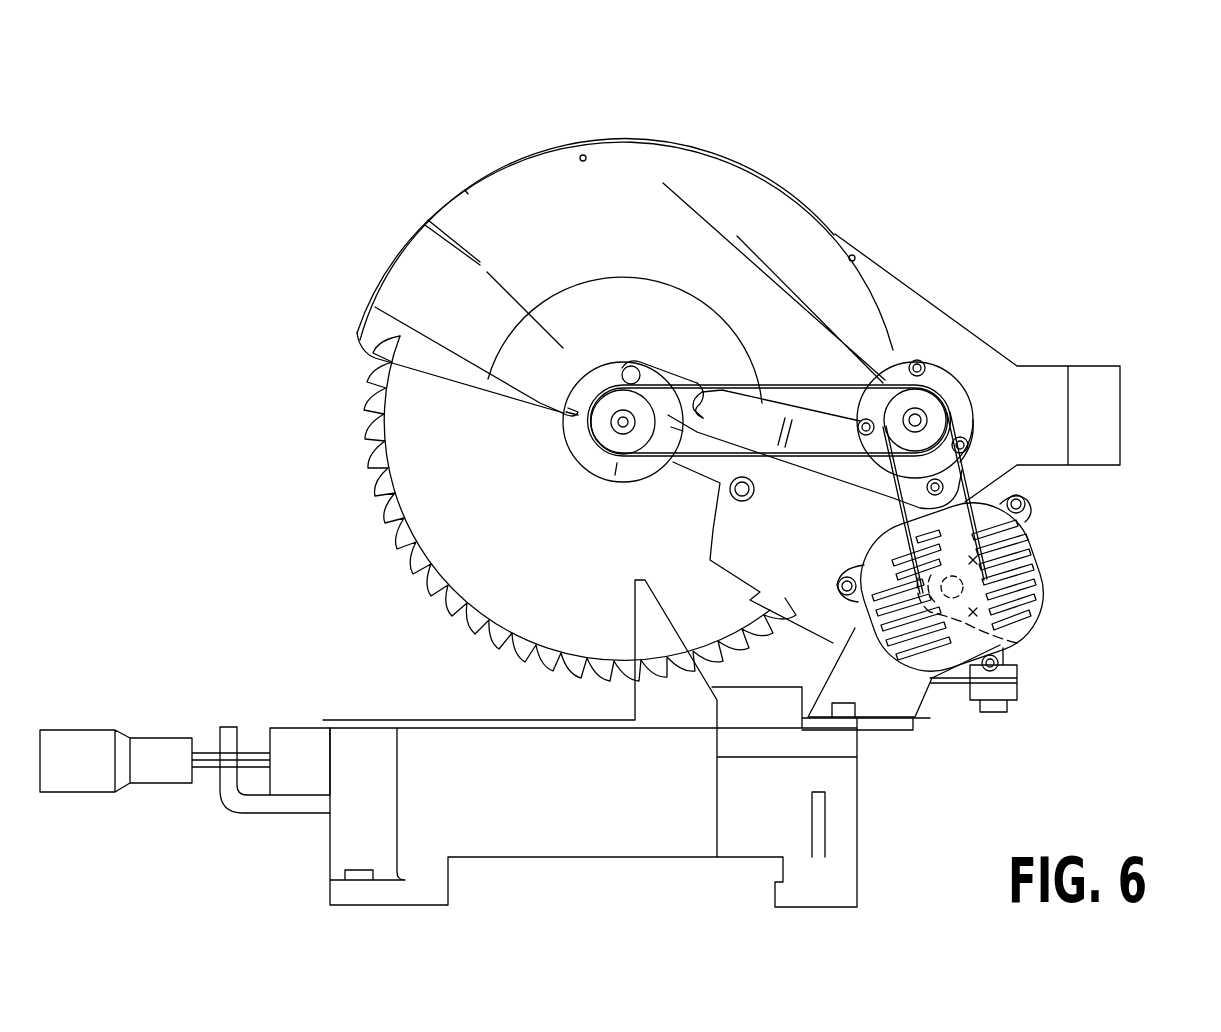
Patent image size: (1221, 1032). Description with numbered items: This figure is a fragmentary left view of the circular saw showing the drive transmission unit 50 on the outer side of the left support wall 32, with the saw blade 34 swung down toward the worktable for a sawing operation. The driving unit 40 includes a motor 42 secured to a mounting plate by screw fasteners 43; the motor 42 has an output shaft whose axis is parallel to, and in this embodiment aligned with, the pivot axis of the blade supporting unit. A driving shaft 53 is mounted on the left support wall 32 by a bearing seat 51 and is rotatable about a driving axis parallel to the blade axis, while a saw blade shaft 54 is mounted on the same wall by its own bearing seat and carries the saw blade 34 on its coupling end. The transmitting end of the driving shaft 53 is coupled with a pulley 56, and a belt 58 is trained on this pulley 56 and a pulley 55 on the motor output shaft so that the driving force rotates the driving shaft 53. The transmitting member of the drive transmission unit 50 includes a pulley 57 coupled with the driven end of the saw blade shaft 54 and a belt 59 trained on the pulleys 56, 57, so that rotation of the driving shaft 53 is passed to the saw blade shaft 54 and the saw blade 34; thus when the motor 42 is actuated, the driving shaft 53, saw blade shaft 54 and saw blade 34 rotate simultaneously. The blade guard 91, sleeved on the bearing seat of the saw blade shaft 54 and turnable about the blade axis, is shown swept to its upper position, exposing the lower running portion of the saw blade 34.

The left support wall 32 is at (613, 138).
The circular saw blade 34 is at (374, 399).
The blade guard 91 is at (465, 190).
The driving unit 40 is at (1055, 556).
The motor 42 is at (1040, 600).
The screw fasteners 43 is at (1027, 500).
The drive transmission unit 50 is at (822, 380).
The bearing seat 51 is at (939, 367).
The driving shaft 53 is at (908, 412).
The saw blade shaft 54 is at (625, 410).
The pulley 55 is at (1017, 643).
The pulley 56 is at (937, 410).
The pulley 57 is at (645, 418).
The belt 58 is at (997, 423).
The belt 59 is at (770, 386).